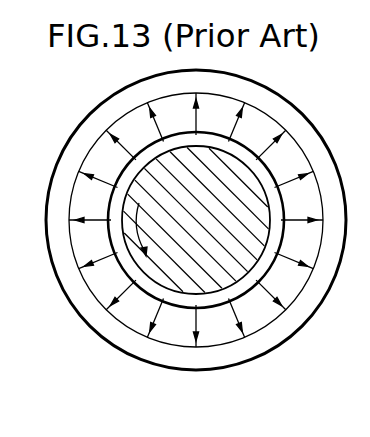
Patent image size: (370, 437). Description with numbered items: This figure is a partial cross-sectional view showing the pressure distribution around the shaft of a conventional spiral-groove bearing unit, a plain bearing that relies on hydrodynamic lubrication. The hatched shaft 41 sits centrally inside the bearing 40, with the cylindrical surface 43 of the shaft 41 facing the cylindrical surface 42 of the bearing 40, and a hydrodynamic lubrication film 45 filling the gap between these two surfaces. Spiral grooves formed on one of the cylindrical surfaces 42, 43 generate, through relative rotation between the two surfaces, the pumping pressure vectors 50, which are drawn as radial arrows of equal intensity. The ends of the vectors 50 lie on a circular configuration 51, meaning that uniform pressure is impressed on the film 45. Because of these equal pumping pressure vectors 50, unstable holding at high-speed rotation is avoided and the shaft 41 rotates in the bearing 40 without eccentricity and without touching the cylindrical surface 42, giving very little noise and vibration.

The bearing 40 is at (162, 369).
The shaft 41 is at (238, 188).
The cylindrical surface of the bearing 42 is at (122, 262).
The cylindrical surface of the shaft 43 is at (140, 280).
The hydrodynamic lubrication film 45 is at (241, 153).
The pumping pressure vectors 50 is at (242, 320).
The circular configuration 51 is at (272, 328).